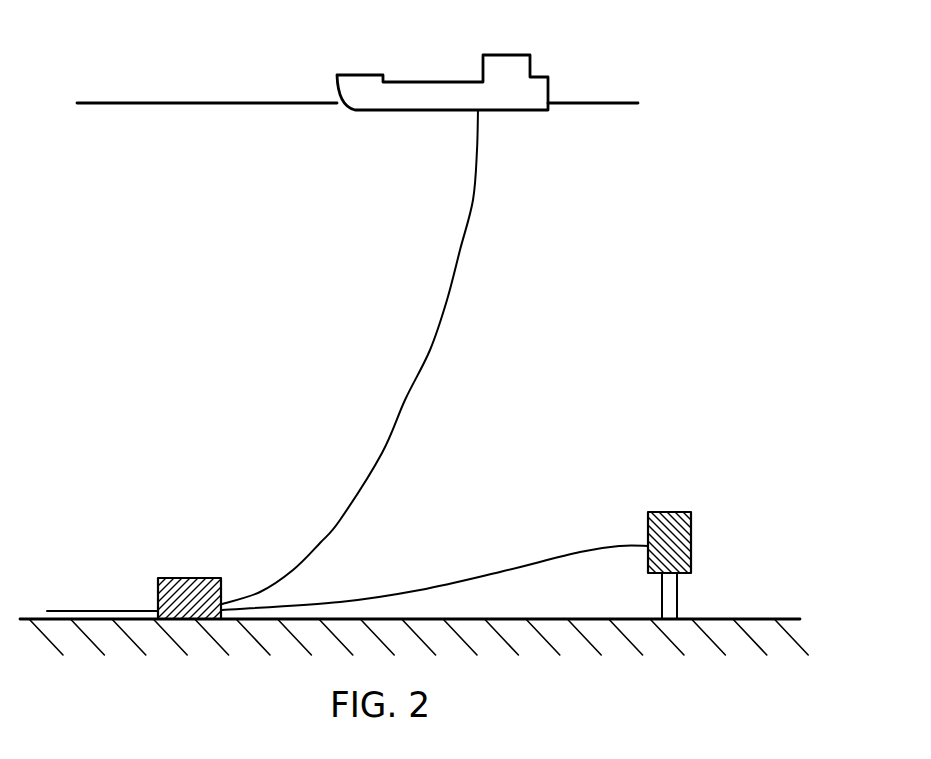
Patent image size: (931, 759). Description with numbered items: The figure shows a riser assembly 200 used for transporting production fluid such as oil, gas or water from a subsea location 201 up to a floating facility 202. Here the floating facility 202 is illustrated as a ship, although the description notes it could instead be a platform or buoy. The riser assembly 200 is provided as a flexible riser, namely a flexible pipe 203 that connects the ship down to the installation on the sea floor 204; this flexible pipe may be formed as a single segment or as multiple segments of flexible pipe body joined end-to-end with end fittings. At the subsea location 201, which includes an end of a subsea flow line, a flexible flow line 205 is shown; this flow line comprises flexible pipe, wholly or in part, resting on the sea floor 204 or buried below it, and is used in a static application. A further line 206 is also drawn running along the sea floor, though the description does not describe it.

The riser assembly 200 is at (492, 205).
The subsea location 201 is at (187, 578).
The floating facility 202 is at (356, 75).
The flexible pipe 203 is at (382, 457).
The sea floor 204 is at (750, 619).
The flexible flow line 205 is at (102, 610).
The cable to subsea structure 206 is at (575, 550).